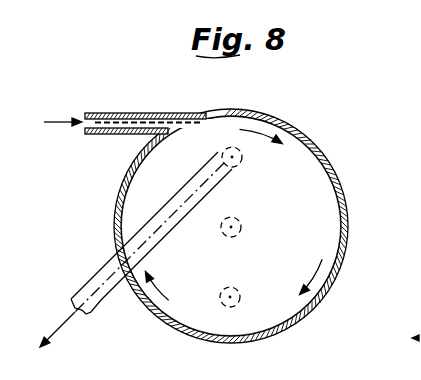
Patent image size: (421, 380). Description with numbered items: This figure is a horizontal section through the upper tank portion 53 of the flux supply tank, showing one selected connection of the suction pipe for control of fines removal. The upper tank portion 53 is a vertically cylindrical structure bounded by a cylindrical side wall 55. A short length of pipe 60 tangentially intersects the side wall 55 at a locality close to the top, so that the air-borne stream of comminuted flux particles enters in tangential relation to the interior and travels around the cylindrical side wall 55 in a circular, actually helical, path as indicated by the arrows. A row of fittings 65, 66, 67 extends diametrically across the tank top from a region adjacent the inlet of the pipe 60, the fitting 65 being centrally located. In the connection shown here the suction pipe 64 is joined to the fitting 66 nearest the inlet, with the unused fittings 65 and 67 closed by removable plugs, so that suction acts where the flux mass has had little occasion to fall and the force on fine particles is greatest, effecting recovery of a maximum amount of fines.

The upper tank portion 53 is at (326, 212).
The cylindrical side wall 55 is at (333, 169).
The pipe 60 is at (128, 99).
The suction pipe 64 is at (103, 302).
The fitting 65 is at (241, 226).
The fitting 66 is at (241, 160).
The fitting 67 is at (236, 299).